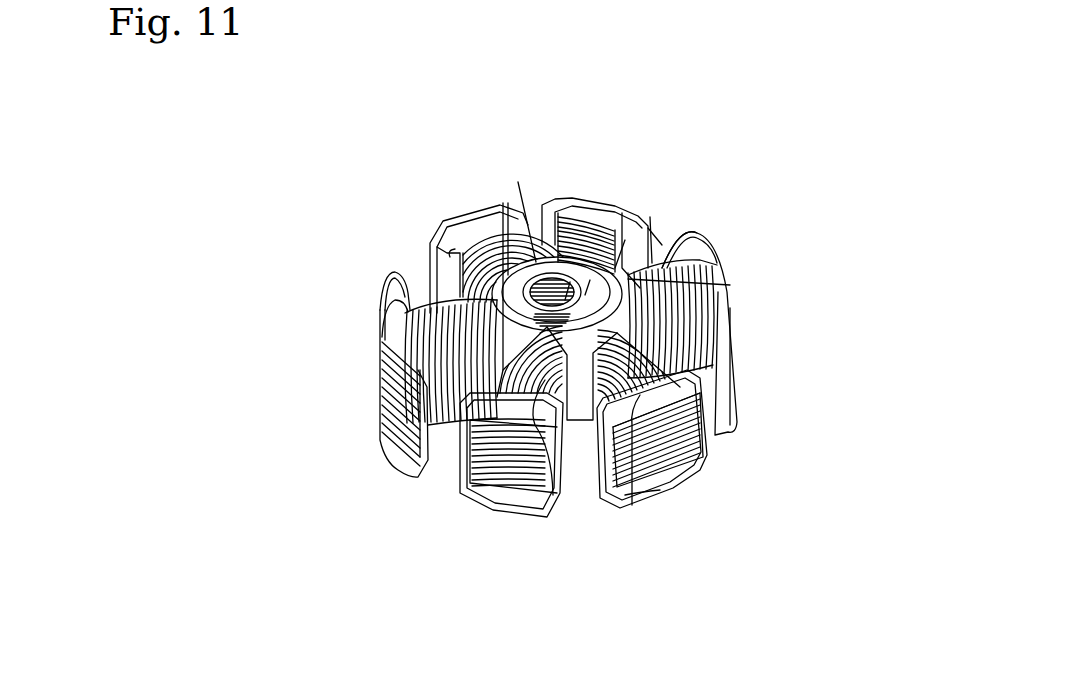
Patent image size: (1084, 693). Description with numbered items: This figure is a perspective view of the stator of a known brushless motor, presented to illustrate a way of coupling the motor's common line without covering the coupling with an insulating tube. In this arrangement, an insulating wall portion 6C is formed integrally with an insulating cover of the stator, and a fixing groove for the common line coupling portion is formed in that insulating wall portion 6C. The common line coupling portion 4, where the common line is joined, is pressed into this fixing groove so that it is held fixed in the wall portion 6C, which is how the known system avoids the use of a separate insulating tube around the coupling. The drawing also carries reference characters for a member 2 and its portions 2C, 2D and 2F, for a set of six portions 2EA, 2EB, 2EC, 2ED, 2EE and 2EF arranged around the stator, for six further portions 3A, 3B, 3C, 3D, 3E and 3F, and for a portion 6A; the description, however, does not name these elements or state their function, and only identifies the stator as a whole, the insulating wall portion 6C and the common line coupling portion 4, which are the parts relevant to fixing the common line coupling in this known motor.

The stator core 2 is at (730, 260).
The core portion 2C is at (590, 280).
The core portion 2D is at (570, 282).
The coil 2EA is at (505, 482).
The coil 2EB is at (703, 460).
The coil 2EC is at (733, 300).
The coil 2ED is at (565, 204).
The coil 2EE is at (475, 219).
The coil 2EF is at (385, 338).
The bobbin flange 2F is at (660, 490).
The pole tooth 3A is at (553, 495).
The pole tooth 3B is at (632, 505).
The pole tooth 3C is at (700, 234).
The pole tooth 3D is at (625, 240).
The pole tooth 3E is at (452, 263).
The pole tooth 3F is at (390, 313).
The common line coupling portion 4 is at (541, 262).
The terminal 6A is at (730, 285).
The insulating wall portion 6C is at (650, 230).